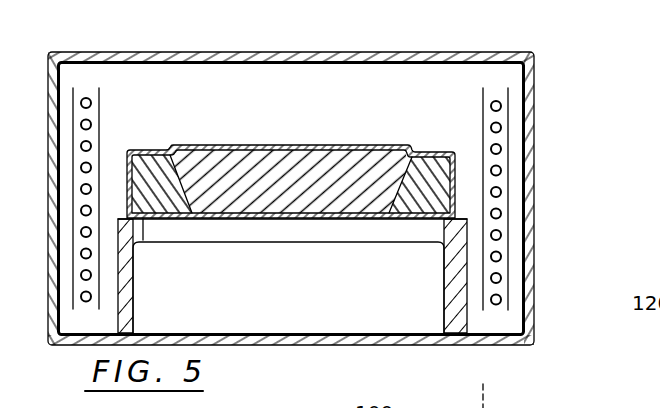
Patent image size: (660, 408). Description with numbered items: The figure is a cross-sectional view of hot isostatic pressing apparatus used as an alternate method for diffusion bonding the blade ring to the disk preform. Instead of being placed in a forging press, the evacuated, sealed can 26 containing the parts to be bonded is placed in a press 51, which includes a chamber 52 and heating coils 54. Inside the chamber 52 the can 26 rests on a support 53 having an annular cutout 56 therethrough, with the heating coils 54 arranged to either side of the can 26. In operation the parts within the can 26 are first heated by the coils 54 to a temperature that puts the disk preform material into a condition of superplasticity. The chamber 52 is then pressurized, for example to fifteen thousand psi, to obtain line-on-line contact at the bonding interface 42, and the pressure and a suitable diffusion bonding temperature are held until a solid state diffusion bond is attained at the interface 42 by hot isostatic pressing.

The press 51 is at (545, 84).
The chamber 52 is at (475, 181).
The support 53 is at (444, 301).
The heating coils 54 is at (99, 112).
The annular cutout 56 is at (144, 222).
The can 26 is at (291, 193).
The bonding interface 42 is at (180, 179).